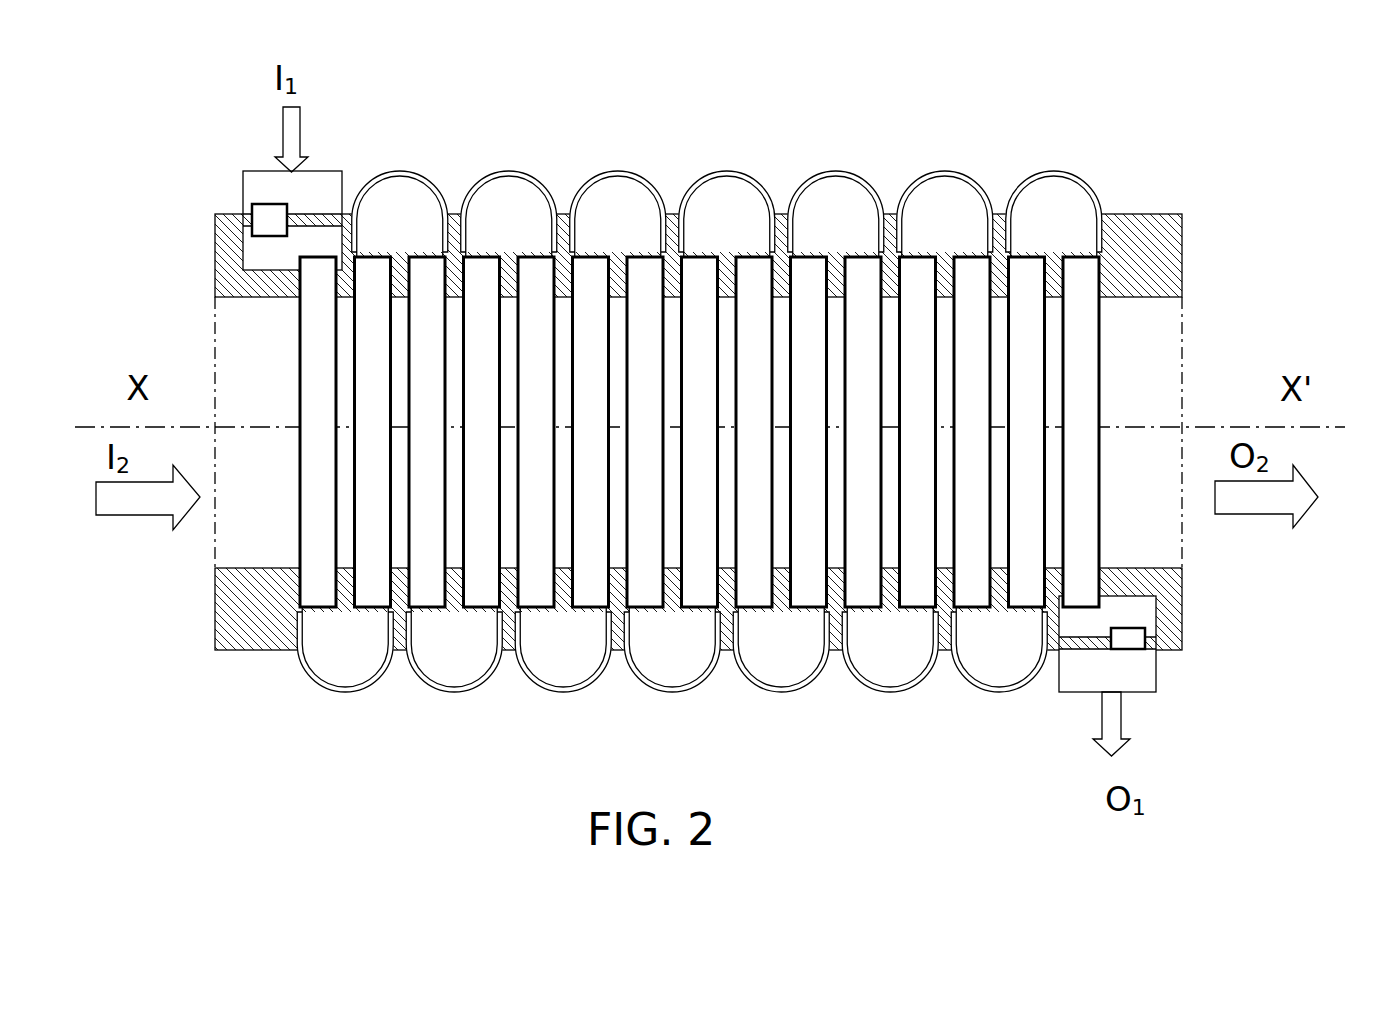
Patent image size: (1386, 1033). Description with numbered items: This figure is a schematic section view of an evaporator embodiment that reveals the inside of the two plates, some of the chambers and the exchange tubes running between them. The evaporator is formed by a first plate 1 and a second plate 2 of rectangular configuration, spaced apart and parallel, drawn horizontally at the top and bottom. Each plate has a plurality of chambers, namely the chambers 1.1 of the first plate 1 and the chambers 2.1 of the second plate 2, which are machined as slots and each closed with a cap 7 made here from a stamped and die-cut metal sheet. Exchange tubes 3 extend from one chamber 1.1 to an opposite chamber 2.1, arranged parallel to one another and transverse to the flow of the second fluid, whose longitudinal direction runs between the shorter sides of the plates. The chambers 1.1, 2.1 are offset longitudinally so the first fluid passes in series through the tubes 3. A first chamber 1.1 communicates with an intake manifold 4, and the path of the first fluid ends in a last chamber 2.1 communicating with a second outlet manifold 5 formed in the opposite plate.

The first plate 1 is at (1140, 228).
The chambers of the first plate 1.1 is at (938, 198).
The second plate 2 is at (257, 643).
The chambers of the second plate 2.1 is at (890, 672).
The exchange tubes 3 is at (412, 482).
The intake manifold 4 is at (320, 177).
The second outlet manifold 5 is at (1062, 664).
The cap 7 is at (517, 170).